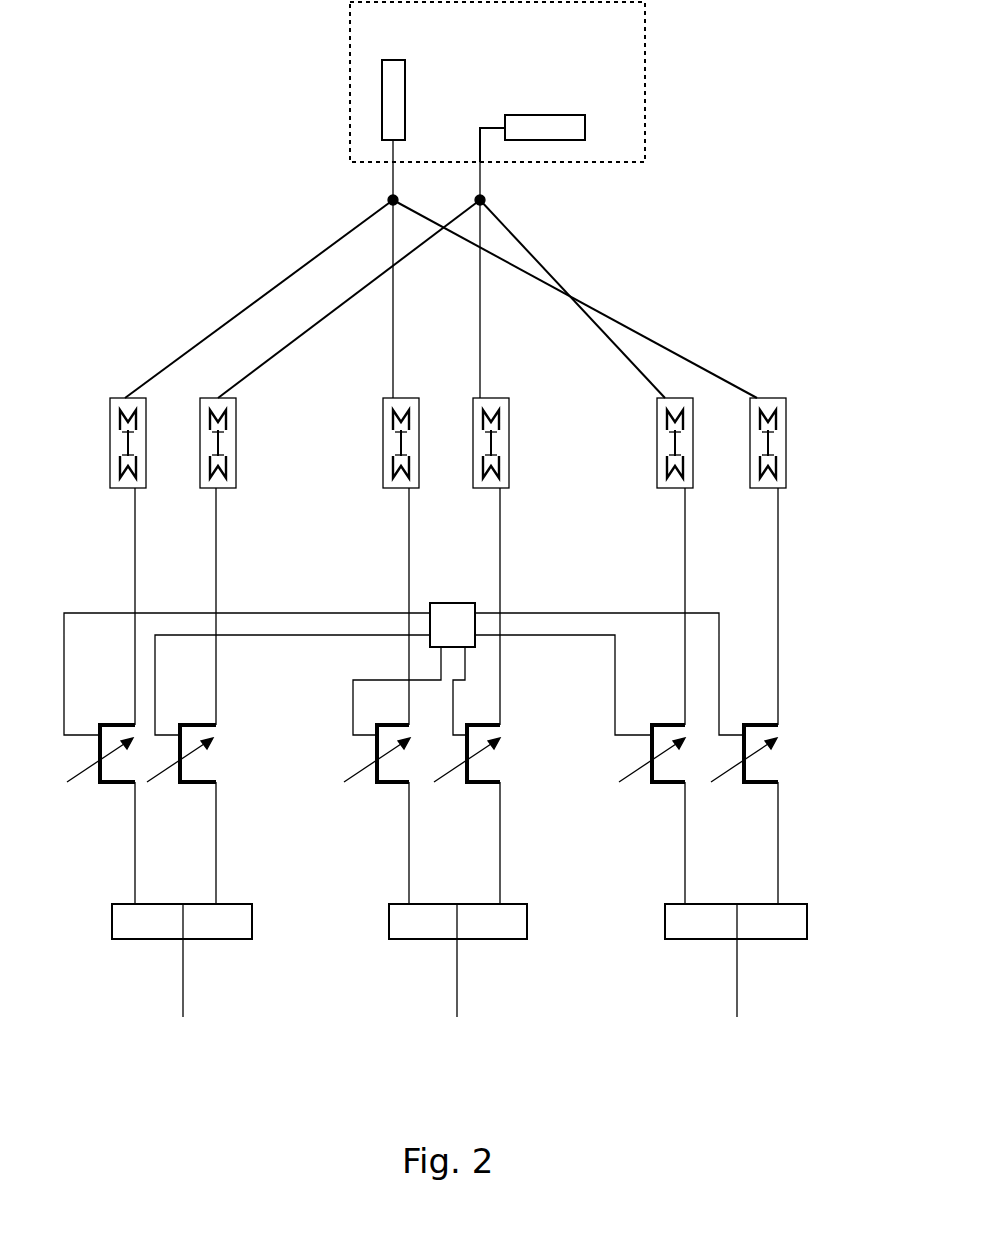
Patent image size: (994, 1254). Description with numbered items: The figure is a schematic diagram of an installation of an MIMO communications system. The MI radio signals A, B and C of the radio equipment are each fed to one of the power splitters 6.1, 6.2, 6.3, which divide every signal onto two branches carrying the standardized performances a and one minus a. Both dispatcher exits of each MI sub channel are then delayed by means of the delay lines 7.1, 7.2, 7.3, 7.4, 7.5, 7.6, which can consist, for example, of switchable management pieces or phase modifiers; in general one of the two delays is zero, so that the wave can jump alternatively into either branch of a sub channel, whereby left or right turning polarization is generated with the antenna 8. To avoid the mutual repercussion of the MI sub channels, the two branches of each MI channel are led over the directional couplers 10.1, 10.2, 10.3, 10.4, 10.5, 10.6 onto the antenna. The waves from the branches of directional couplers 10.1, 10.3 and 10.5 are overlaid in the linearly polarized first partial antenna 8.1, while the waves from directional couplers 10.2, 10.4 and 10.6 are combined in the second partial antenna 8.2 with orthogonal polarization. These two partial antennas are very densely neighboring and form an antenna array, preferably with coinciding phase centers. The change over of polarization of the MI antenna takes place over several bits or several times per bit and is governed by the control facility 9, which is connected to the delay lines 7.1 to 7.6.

The antenna 8 is at (523, 82).
The partial antenna A1 8.1 is at (407, 105).
The partial antenna A2 8.2 is at (572, 105).
The directional coupler 10.1 is at (100, 488).
The directional coupler 10.2 is at (190, 488).
The directional coupler 10.3 is at (373, 488).
The directional coupler 10.4 is at (463, 488).
The directional coupler 10.5 is at (647, 488).
The directional coupler 10.6 is at (740, 488).
The control facility 9 is at (404, 669).
The delay line 7.1 is at (100, 792).
The delay line 7.2 is at (180, 792).
The delay line 7.3 is at (377, 792).
The delay line 7.4 is at (467, 792).
The delay line 7.5 is at (652, 792).
The delay line 7.6 is at (744, 792).
The power splitter 6.1 is at (101, 939).
The power splitter 6.2 is at (380, 939).
The power splitter 6.3 is at (655, 939).